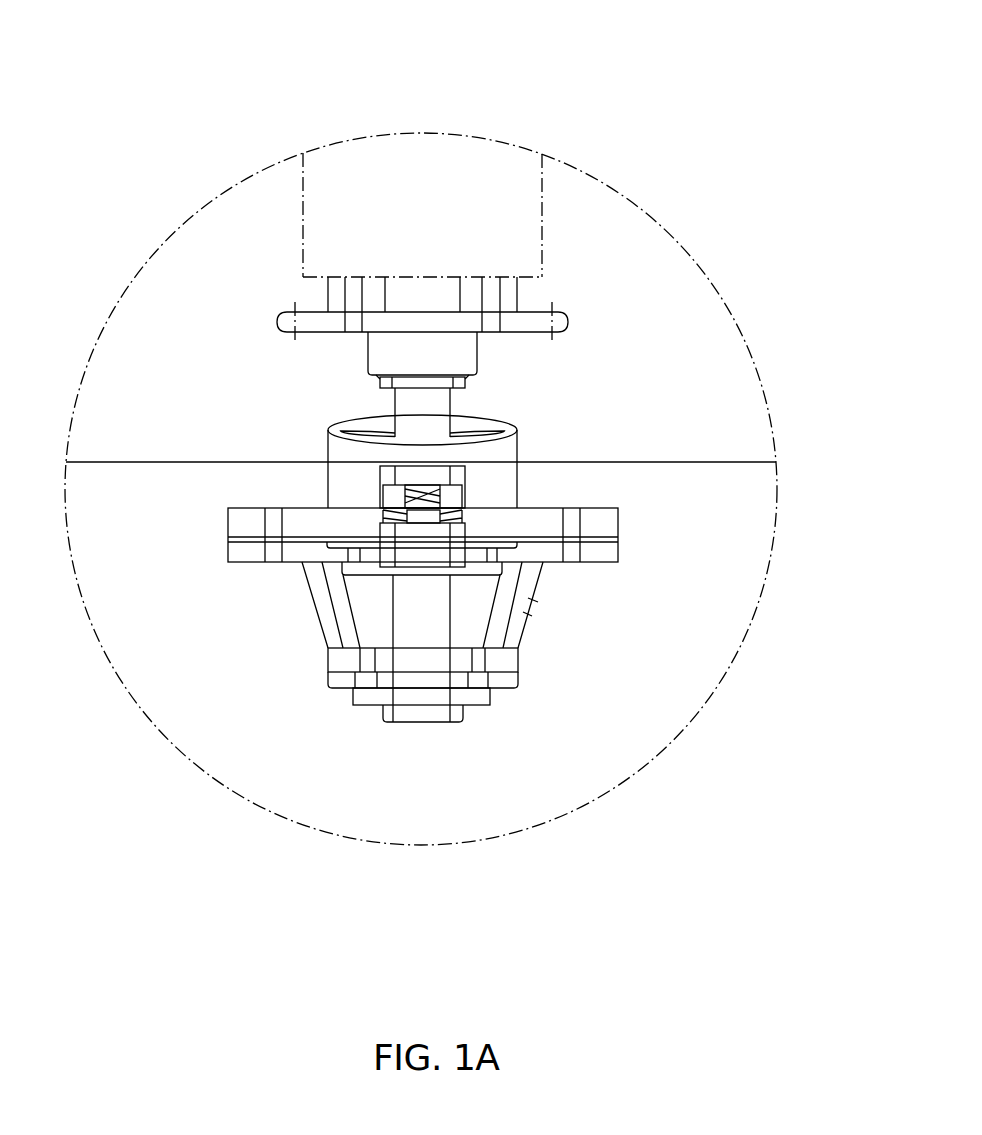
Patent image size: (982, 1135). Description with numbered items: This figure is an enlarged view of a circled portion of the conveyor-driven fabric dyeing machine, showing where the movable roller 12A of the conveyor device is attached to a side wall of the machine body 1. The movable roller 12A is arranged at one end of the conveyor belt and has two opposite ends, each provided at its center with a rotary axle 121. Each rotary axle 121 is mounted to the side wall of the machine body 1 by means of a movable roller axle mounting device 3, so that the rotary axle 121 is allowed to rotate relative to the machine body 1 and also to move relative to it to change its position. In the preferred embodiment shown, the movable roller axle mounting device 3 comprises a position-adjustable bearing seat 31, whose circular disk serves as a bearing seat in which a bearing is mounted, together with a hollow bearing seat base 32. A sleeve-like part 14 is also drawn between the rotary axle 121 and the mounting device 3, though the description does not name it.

The machine body 1 is at (165, 462).
The movable roller 12A is at (410, 173).
The rotary axle 121 is at (410, 410).
The sleeve 14 is at (517, 463).
The movable roller axle mounting device 3 is at (290, 655).
The position-adjustable bearing seat 31 is at (510, 662).
The hollow bearing seat base 32 is at (608, 517).